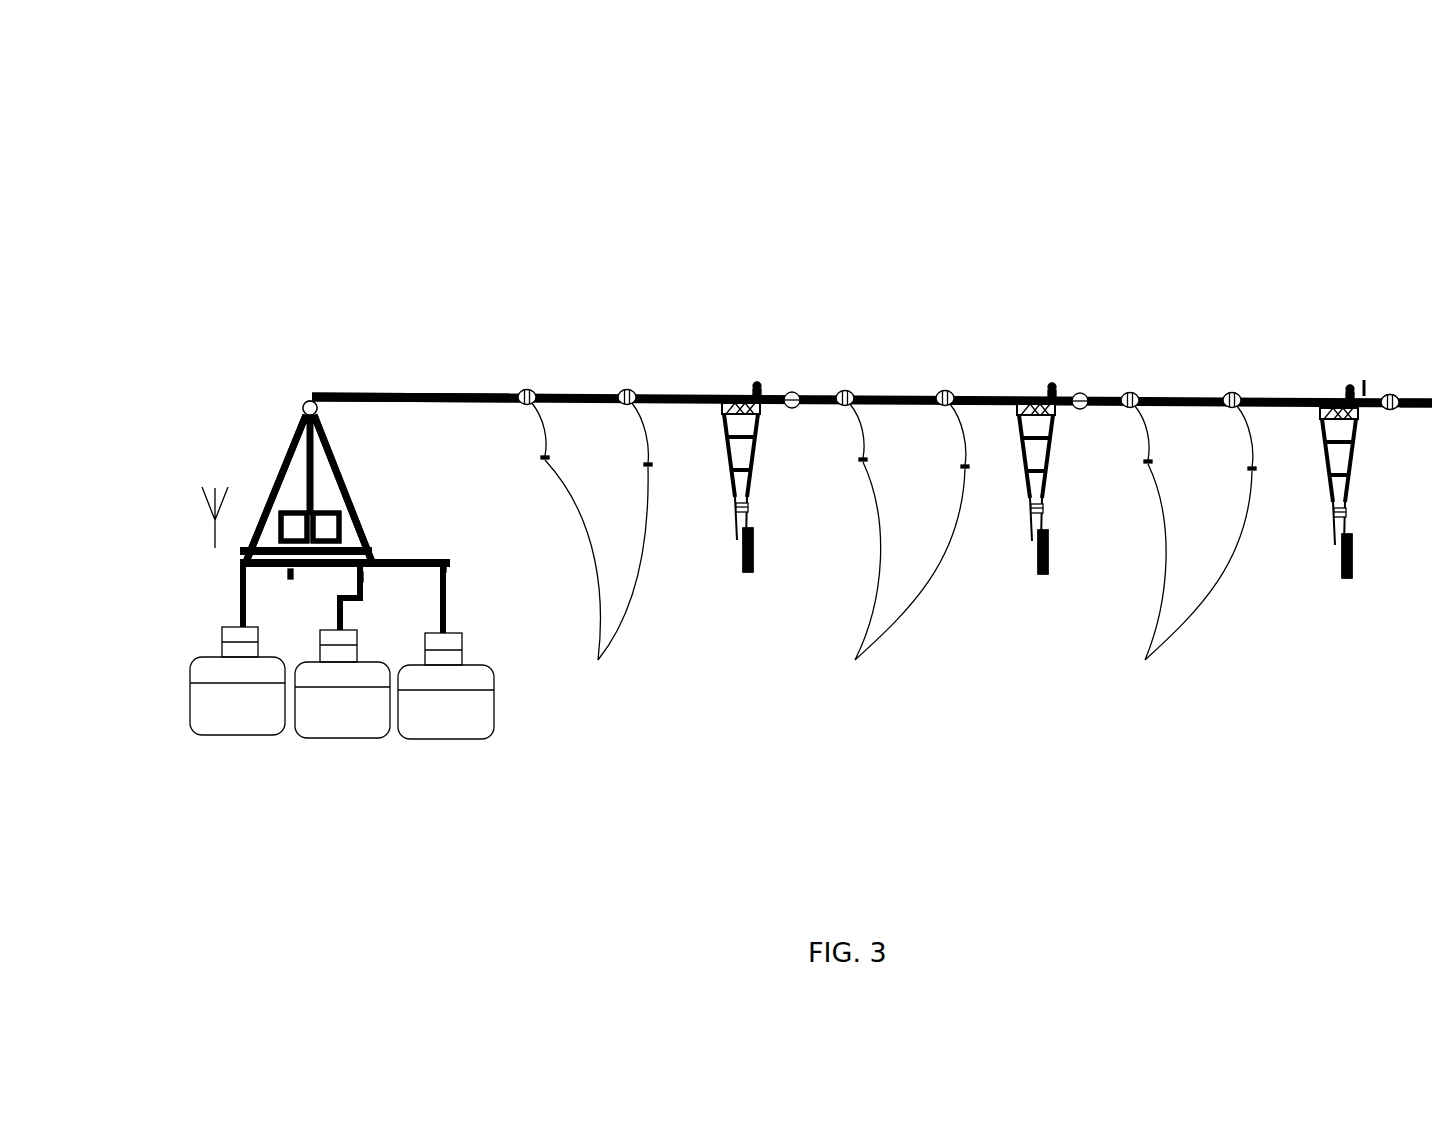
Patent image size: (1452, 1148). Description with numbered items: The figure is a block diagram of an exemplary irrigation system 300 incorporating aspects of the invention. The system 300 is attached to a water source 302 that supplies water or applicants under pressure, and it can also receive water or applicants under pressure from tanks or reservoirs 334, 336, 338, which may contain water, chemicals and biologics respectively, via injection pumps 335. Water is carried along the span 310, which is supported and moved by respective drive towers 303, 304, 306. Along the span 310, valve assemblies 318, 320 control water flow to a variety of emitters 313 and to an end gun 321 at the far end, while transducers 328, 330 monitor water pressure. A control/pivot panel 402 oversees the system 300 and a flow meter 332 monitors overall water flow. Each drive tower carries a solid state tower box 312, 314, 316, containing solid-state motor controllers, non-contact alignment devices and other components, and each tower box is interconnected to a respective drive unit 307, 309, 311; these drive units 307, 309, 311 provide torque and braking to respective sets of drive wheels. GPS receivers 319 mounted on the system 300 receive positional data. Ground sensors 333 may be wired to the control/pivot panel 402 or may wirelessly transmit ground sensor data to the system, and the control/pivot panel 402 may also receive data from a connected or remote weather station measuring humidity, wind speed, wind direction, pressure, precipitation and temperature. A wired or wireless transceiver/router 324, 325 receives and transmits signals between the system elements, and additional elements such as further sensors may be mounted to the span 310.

The system 300 is at (876, 76).
The water source 302 is at (360, 534).
The drive tower 303 is at (735, 492).
The drive tower 304 is at (1030, 494).
The drive tower 306 is at (1332, 498).
The drive unit 307 is at (749, 510).
The drive unit 309 is at (1044, 512).
The span 310 is at (334, 393).
The drive unit 311 is at (1348, 516).
The solid state tower box 312 is at (722, 400).
The emitters 313 is at (894, 549).
The solid state tower box 314 is at (1013, 400).
The solid state tower box 316 is at (1327, 405).
The valve assemblies 318 is at (309, 401).
The GPS receivers 319 is at (757, 382).
The valve assembly 320 is at (1402, 408).
The end gun 321 is at (1397, 392).
The transceiver/router 324 is at (486, 374).
The transceiver/router 325 is at (1365, 380).
The transducer 328 is at (792, 392).
The transducer 330 is at (1080, 393).
The flow meter 332 is at (283, 530).
The ground sensors 333 is at (213, 530).
The tank 334 is at (237, 710).
The injection pumps 335 is at (446, 570).
The tank 336 is at (337, 718).
The tank 338 is at (447, 720).
The control/pivot panel 402 is at (366, 527).